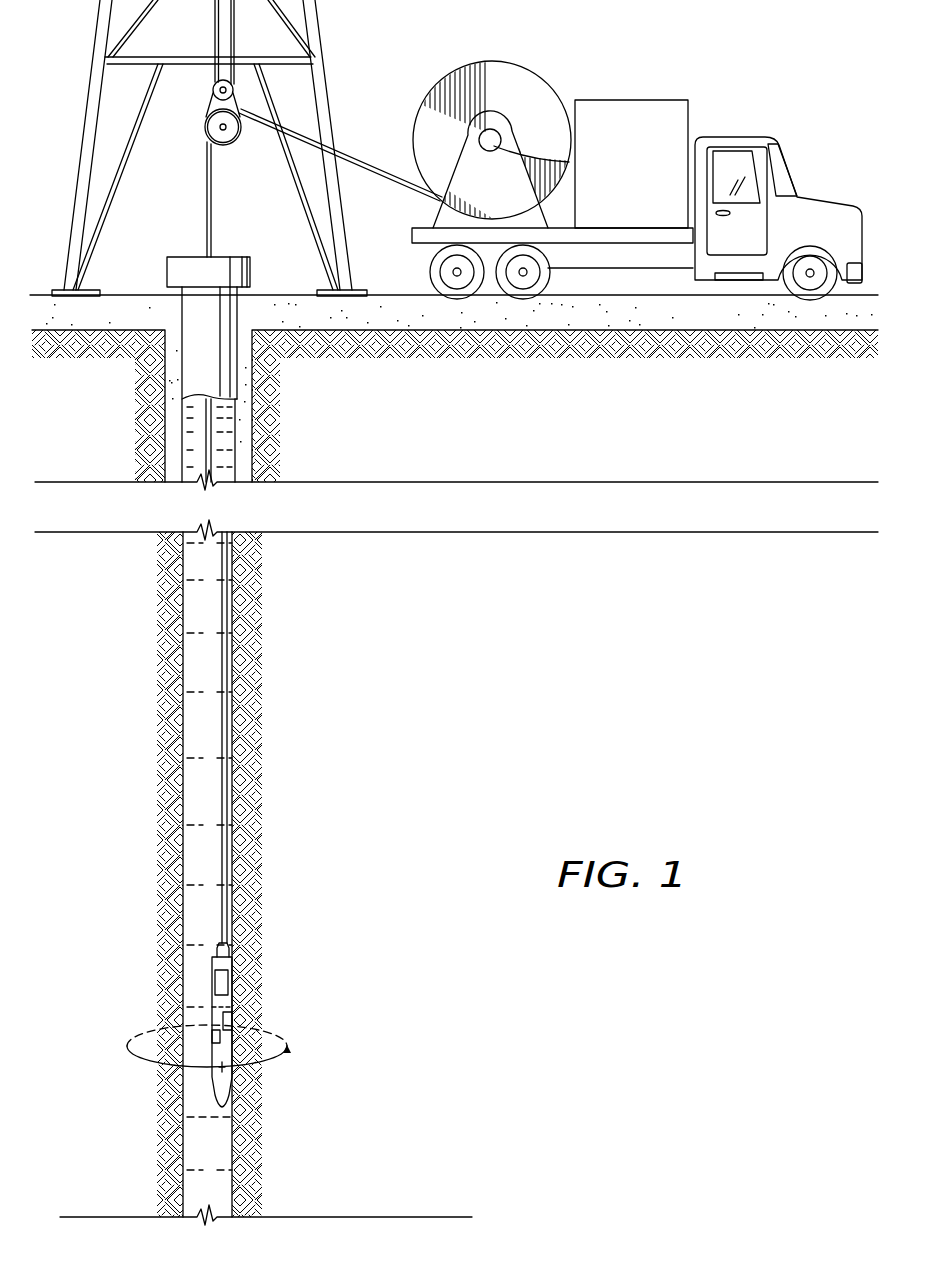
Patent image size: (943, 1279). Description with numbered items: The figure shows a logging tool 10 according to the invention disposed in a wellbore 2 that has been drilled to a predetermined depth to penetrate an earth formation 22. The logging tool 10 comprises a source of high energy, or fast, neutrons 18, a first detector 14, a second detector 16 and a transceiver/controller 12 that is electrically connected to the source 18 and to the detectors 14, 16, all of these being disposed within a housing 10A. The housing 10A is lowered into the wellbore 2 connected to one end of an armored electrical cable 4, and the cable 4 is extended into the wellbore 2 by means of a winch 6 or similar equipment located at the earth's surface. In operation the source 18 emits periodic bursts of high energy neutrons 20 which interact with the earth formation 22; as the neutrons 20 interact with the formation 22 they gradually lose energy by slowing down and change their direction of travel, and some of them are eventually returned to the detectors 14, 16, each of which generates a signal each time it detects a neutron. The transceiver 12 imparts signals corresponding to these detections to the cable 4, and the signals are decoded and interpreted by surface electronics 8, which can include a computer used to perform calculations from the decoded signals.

The wellbore 2 is at (195, 777).
The armored electrical cable 4 is at (220, 617).
The winch 6 is at (493, 61).
The surface electronics 8 is at (632, 100).
The logging tool 10 is at (219, 1015).
The housing 10A is at (233, 1000).
The transceiver/controller 12 is at (213, 975).
The first detector 14 is at (233, 1025).
The second detector 16 is at (213, 1038).
The source of high energy neutrons 18 is at (222, 1068).
The bursts of high energy neutrons 20 is at (290, 1042).
The earth formation 22 is at (349, 822).